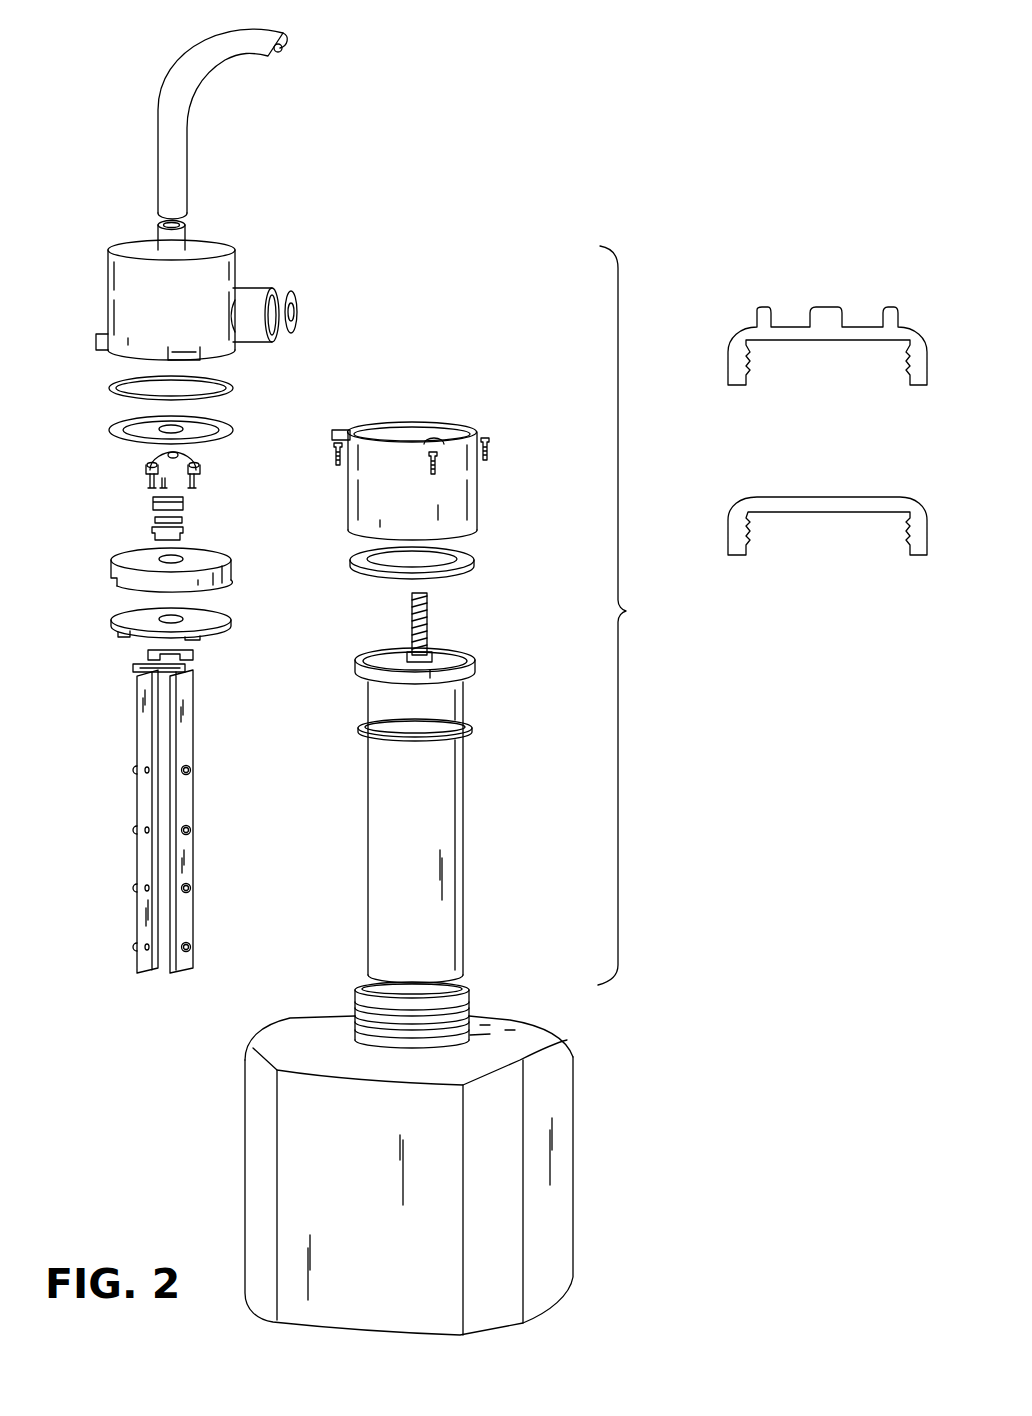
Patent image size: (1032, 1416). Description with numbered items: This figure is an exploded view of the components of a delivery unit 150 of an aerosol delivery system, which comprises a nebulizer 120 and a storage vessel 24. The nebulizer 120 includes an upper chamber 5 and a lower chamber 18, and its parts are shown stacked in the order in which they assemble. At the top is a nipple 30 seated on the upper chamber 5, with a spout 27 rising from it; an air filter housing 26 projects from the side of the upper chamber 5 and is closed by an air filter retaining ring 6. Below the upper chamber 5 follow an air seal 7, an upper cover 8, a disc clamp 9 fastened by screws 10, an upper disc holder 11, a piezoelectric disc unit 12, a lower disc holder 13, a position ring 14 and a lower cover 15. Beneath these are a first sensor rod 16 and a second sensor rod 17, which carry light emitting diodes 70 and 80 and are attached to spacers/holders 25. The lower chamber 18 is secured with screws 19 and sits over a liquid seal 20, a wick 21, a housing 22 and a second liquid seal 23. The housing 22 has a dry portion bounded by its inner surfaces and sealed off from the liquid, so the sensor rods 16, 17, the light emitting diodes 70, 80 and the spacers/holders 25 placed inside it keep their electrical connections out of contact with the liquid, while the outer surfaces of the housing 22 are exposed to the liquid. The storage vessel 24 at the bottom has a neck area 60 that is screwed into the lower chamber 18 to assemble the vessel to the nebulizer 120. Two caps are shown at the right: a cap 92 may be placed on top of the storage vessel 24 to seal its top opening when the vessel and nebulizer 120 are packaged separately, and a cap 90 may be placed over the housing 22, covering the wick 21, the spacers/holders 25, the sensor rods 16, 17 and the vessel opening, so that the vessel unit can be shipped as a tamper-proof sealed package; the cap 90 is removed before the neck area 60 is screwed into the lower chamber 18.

The upper chamber 5 is at (118, 302).
The air filter retaining ring 6 is at (296, 300).
The air seal 7 is at (110, 388).
The upper cover 8 is at (110, 432).
The disc clamp 9 is at (150, 464).
The screws 10 is at (200, 486).
The upper disc holder 11 is at (152, 501).
The piezoelectric disc unit 12 is at (184, 520).
The lower disc holder 13 is at (184, 533).
The position ring 14 is at (112, 564).
The lower cover 15 is at (113, 620).
The first sensor rod 16 is at (138, 738).
The second sensor rod 17 is at (195, 736).
The lower chamber 18 is at (366, 428).
The screws 19 is at (488, 435).
The liquid seal 20 is at (470, 558).
The wick 21 is at (430, 606).
The housing 22 is at (440, 686).
The liquid seal 23 is at (470, 726).
The storage vessel 24 is at (315, 1026).
The spacers/holders 25 is at (194, 655).
The air filter housing 26 is at (255, 286).
The spout hose 27 is at (160, 92).
The nipple 30 is at (157, 231).
The neck area 60 is at (470, 995).
The light emitting diodes (LEDs) 70 is at (131, 830).
The light emitting diodes (LEDs) 80 is at (192, 832).
The cap 90 is at (831, 263).
The cap 92 is at (833, 542).
The nebulizer 120 is at (645, 615).
The delivery unit 150 is at (130, 1118).